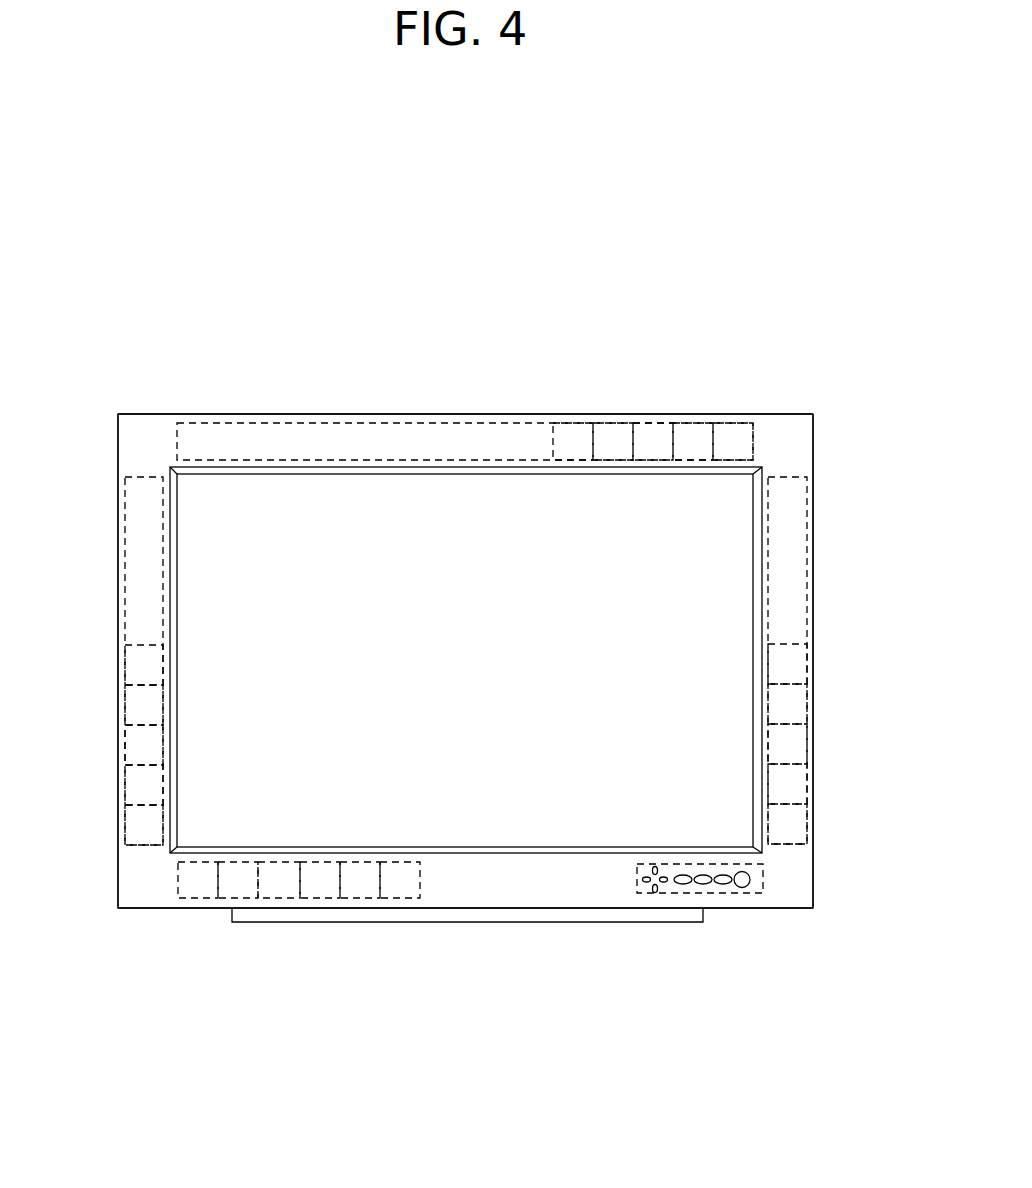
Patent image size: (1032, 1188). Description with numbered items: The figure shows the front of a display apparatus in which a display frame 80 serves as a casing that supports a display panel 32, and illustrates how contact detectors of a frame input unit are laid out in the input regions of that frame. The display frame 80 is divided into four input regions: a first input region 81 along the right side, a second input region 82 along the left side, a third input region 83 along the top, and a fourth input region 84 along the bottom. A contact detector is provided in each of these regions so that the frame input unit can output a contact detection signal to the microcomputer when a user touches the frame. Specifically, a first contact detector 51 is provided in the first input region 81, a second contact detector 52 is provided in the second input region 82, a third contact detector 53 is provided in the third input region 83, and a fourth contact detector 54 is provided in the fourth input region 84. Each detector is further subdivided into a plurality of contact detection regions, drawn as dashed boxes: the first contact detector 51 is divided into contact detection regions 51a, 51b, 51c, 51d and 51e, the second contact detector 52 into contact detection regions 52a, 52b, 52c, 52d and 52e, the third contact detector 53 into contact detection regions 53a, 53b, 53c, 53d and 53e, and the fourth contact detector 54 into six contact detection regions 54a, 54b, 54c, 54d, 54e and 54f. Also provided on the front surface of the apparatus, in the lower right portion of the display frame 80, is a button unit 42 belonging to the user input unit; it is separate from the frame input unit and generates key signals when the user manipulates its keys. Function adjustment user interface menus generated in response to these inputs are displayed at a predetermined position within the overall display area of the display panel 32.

The display frame 80 is at (118, 413).
The display panel 32 is at (330, 553).
The third input region 83 is at (482, 414).
The second input region 82 is at (118, 561).
The first input region 81 is at (813, 561).
The fourth input region 84 is at (474, 908).
The third contact detector 53 is at (648, 372).
The contact detection region 53a is at (558, 428).
The contact detection region 53b is at (600, 428).
The contact detection region 53c is at (645, 428).
The contact detection region 53d is at (690, 428).
The contact detection region 53e is at (732, 428).
The second contact detector 52 is at (102, 661).
The contact detection region 52a is at (135, 662).
The contact detection region 52b is at (135, 702).
The contact detection region 52c is at (135, 742).
The contact detection region 52d is at (135, 782).
The contact detection region 52e is at (135, 822).
The first contact detector 51 is at (831, 660).
The contact detection region 51a is at (797, 662).
The contact detection region 51b is at (797, 702).
The contact detection region 51c is at (797, 742).
The contact detection region 51d is at (797, 782).
The contact detection region 51e is at (797, 822).
The fourth contact detector 54 is at (284, 951).
The contact detection region 54a is at (188, 897).
The contact detection region 54b is at (230, 897).
The contact detection region 54c is at (268, 897).
The contact detection region 54d is at (330, 897).
The contact detection region 54e is at (368, 897).
The contact detection region 54f is at (410, 897).
The button unit 42 is at (733, 895).